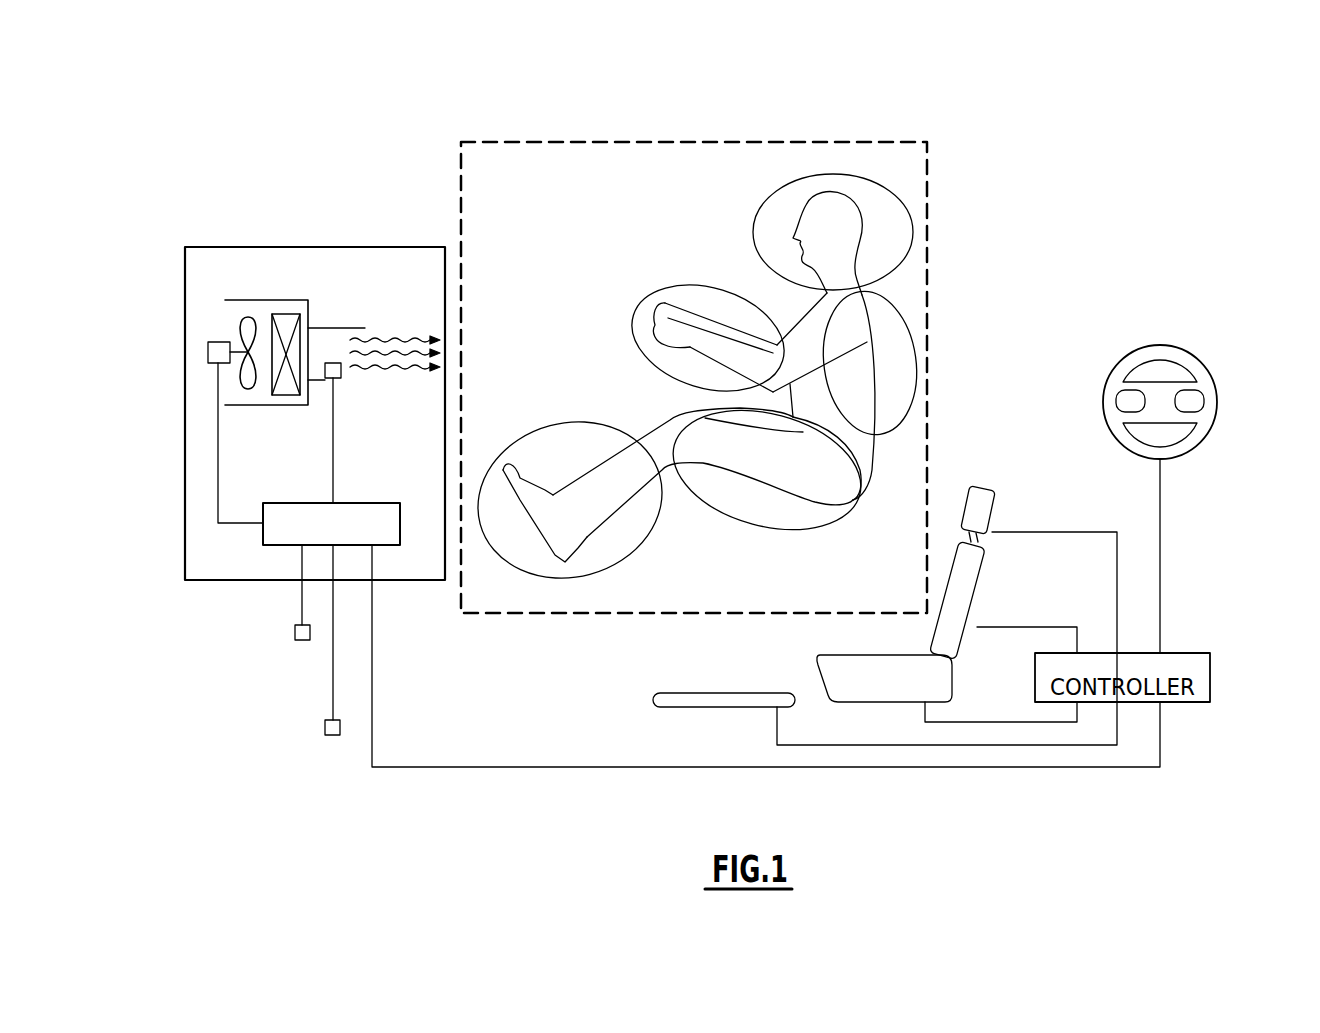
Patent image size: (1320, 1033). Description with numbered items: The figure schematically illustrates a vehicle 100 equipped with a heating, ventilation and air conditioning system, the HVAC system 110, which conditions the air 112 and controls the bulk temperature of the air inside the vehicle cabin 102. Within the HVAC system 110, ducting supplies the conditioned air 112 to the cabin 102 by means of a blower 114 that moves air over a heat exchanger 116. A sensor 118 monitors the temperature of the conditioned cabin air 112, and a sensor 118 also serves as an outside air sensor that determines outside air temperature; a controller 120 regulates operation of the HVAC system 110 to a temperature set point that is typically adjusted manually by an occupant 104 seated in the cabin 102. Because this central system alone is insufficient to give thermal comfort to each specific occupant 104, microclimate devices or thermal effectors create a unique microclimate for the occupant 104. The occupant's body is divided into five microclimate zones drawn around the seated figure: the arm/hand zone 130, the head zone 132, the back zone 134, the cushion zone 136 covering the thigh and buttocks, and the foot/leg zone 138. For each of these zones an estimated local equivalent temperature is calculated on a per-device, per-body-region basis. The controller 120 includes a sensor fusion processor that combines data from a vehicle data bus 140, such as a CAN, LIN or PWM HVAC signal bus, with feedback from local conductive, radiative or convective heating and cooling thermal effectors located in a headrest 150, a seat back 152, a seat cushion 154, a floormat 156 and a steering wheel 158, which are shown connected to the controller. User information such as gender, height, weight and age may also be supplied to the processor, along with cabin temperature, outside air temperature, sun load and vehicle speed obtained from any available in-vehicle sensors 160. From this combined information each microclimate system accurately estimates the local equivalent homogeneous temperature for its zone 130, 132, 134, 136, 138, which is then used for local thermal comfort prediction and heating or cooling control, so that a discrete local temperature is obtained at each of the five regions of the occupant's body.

The vehicle 100 is at (304, 43).
The vehicle cabin 102 is at (556, 140).
The occupant 104 is at (836, 215).
The HVAC system 110 is at (262, 247).
The conditioned air 112 is at (400, 335).
The blower 114 is at (253, 300).
The heat exchanger 116 is at (288, 396).
The sensor 118 is at (341, 378).
The controller 120 is at (372, 503).
The arm/hand zone 130 is at (665, 290).
The head zone 132 is at (770, 196).
The back zone 134 is at (915, 330).
The cushion zone 136 is at (770, 531).
The foot/leg zone 138 is at (580, 425).
The vehicle data bus 140 is at (373, 655).
The headrest 150 is at (992, 497).
The seat back 152 is at (977, 585).
The seat cushion 154 is at (912, 693).
The floormat 156 is at (700, 693).
The steering wheel 158 is at (1206, 378).
The in-vehicle sensors 160 is at (320, 739).